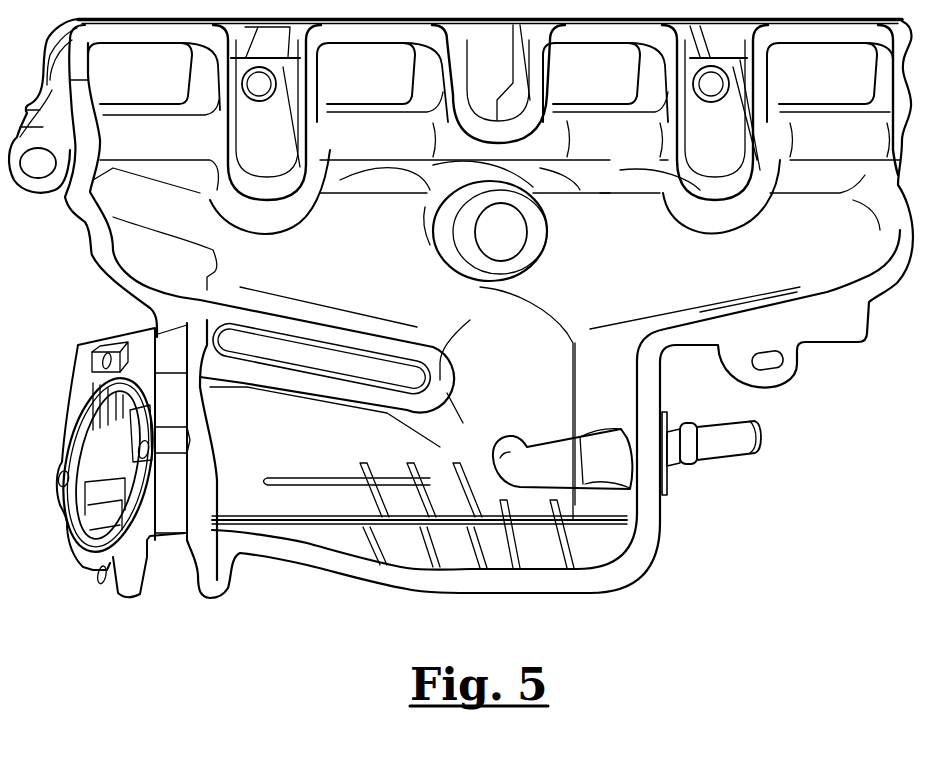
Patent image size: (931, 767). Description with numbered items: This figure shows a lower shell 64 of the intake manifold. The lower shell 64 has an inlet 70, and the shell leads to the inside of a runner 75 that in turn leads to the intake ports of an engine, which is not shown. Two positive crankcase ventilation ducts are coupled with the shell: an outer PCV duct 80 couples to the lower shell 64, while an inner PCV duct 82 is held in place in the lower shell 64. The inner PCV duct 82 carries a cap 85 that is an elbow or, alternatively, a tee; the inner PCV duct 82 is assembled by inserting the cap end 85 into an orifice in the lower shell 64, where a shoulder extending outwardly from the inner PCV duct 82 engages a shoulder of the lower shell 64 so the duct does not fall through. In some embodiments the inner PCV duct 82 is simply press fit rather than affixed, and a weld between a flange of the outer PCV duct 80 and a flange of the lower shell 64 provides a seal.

The lower shell 64 is at (637, 281).
The inlet 70 is at (183, 501).
The runner 75 is at (155, 88).
The outer PCV duct 80 is at (738, 446).
The inner PCV duct 82 is at (568, 463).
The cap 85 is at (503, 473).